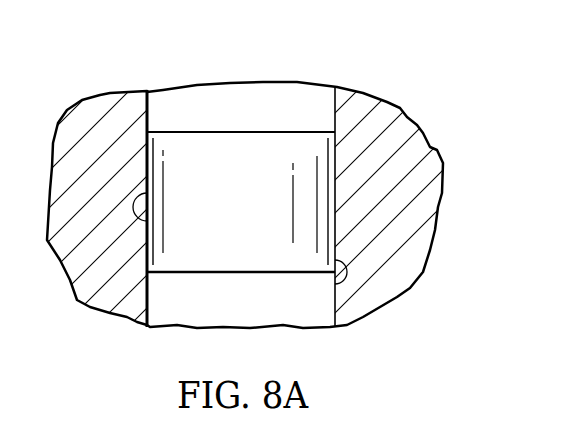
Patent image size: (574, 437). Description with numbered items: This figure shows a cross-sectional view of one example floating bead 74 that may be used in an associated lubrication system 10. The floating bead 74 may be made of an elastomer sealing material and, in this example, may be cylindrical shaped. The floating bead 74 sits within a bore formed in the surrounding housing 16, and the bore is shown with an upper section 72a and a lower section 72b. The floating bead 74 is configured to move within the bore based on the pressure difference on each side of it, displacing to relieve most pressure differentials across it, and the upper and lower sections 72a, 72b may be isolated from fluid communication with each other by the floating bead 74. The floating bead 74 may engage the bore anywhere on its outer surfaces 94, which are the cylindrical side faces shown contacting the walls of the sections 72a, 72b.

The assembly 10 is at (99, 62).
The housing body 16 is at (390, 110).
The first wall 72a is at (147, 95).
The second wall 72b is at (147, 322).
The detent recess 94 is at (153, 199).
The retaining recess 74 is at (335, 283).